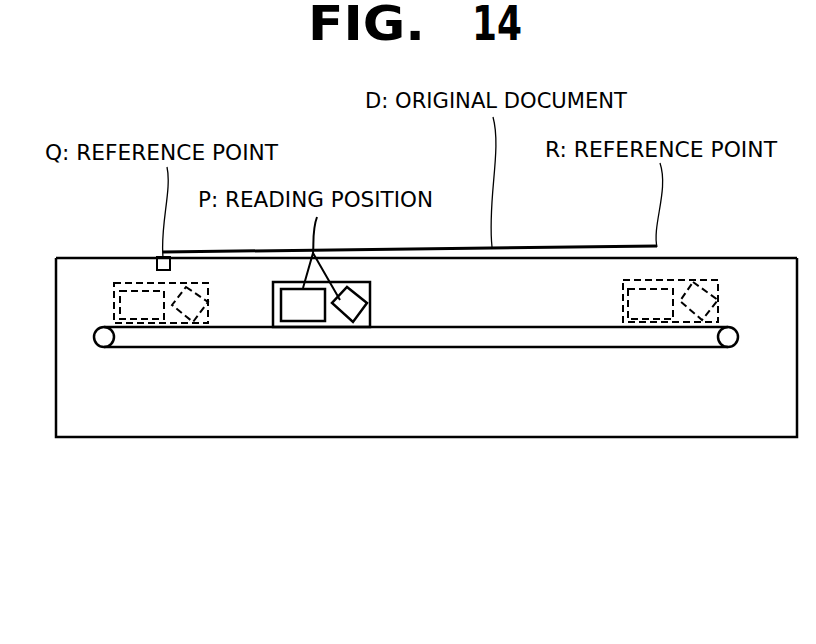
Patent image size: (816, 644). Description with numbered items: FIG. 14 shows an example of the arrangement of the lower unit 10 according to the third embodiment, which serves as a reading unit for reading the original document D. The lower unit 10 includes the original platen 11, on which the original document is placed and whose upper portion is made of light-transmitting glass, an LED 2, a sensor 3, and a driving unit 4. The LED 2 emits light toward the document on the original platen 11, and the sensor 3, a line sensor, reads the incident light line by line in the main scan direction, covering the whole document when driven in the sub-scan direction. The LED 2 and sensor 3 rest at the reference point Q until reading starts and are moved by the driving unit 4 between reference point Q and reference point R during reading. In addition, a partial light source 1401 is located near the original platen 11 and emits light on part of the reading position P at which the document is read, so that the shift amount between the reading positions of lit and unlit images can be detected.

The lower unit 10 is at (424, 470).
The original platen 11 is at (131, 258).
The light source 1401 is at (163, 270).
The sensor 3 is at (303, 308).
The LED 2 is at (357, 308).
The driving unit 4 is at (735, 340).